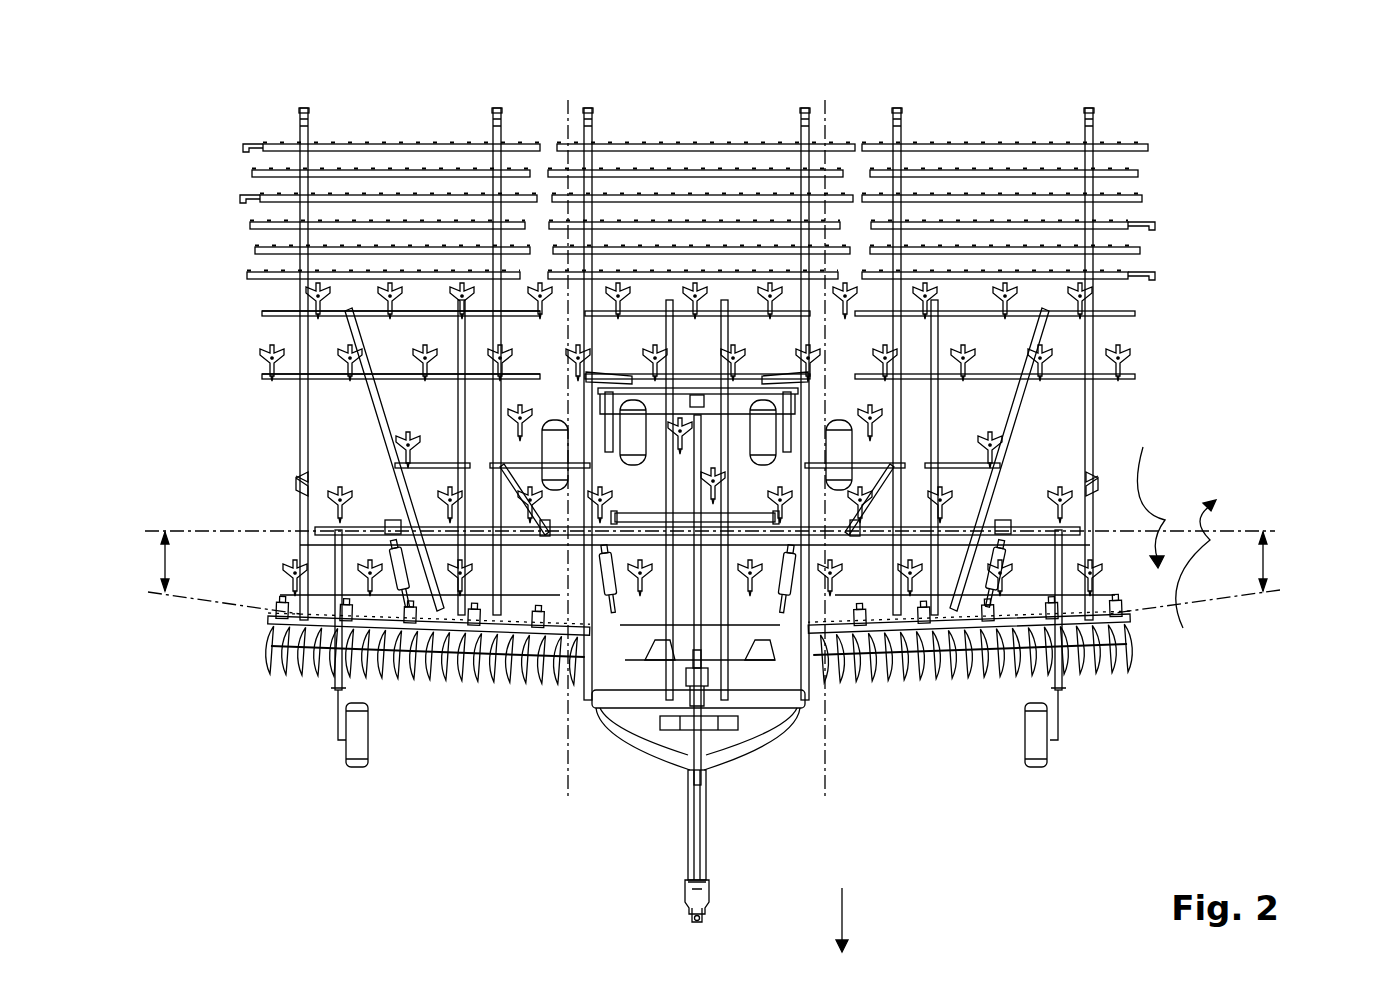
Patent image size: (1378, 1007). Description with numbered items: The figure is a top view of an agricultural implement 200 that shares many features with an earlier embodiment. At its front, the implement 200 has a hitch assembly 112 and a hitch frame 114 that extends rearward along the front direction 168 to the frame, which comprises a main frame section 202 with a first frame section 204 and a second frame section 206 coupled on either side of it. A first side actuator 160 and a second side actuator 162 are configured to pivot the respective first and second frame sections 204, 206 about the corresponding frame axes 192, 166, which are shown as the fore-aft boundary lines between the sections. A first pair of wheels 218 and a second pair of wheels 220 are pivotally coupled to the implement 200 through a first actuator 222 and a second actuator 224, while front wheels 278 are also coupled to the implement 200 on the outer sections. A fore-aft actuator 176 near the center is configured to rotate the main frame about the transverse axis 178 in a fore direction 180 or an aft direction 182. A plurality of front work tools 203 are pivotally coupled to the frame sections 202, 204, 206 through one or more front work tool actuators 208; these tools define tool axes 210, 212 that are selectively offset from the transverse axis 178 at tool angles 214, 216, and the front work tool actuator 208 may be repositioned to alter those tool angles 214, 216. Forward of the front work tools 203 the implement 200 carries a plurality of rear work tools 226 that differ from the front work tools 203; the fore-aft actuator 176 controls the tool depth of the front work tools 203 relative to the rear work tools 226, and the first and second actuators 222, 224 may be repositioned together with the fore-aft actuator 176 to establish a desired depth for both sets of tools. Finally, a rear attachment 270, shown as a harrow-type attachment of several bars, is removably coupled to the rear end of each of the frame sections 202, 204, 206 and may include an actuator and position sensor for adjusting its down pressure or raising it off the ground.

The implement 200 is at (1240, 150).
The main frame section 202 is at (569, 88).
The first frame section 204 is at (237, 88).
The second frame section 206 is at (1155, 88).
The rear attachment 270 is at (212, 133).
The second actuator 224 is at (612, 425).
The first actuator 222 is at (785, 425).
The rear work tools 226 is at (1005, 300).
The second pair of wheels 220 is at (555, 455).
The first pair of wheels 218 is at (845, 455).
The first side actuator 160 is at (590, 560).
The second side actuator 162 is at (800, 565).
The fore direction 180 is at (1147, 492).
The transverse axis 178 is at (1238, 530).
The aft direction 182 is at (1188, 577).
The tool angle 214 is at (162, 560).
The tool angle 216 is at (1270, 562).
The tool axis 210 is at (210, 602).
The tool axis 212 is at (1222, 605).
The front work tools 203 is at (432, 688).
The front wheels 278 is at (352, 752).
The frame axis 192 is at (568, 780).
The frame axis 166 is at (825, 780).
The fore-aft actuator 176 is at (685, 675).
The front work tool actuator 208 is at (742, 650).
The hitch frame 114 is at (705, 832).
The hitch assembly 112 is at (676, 916).
The front direction 168 is at (842, 918).